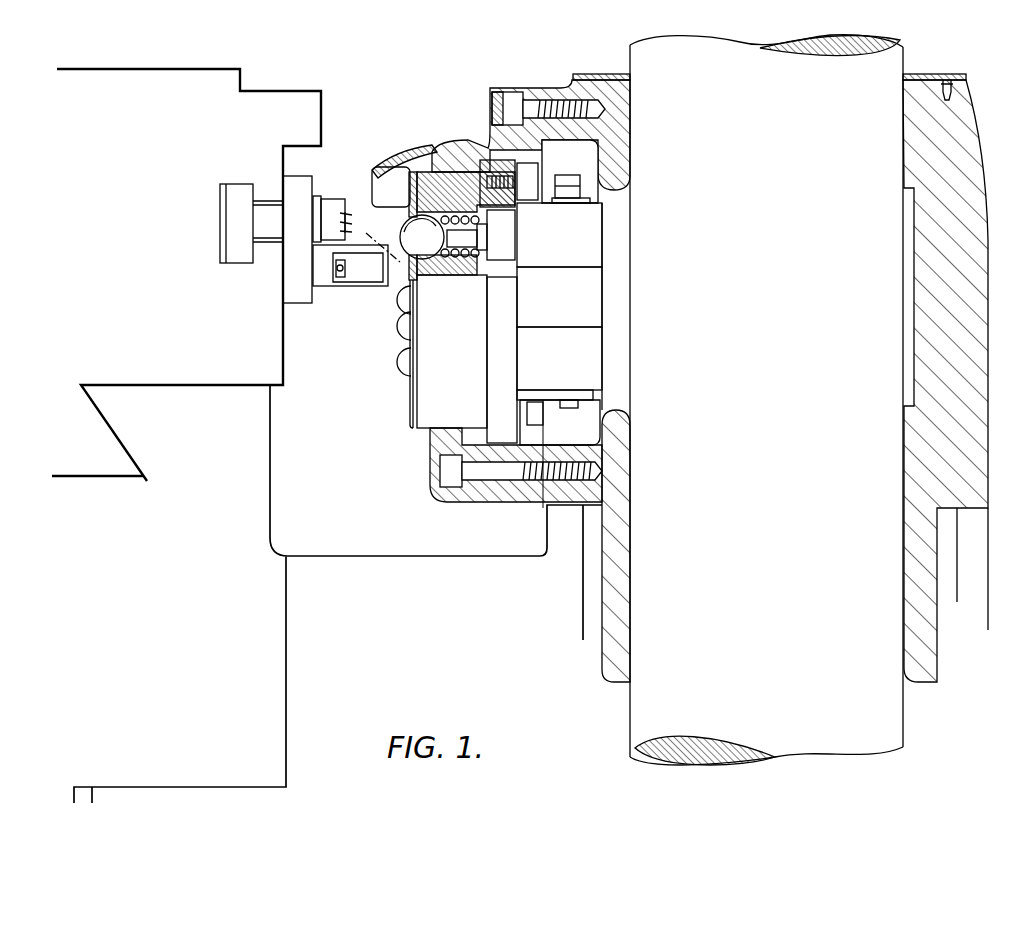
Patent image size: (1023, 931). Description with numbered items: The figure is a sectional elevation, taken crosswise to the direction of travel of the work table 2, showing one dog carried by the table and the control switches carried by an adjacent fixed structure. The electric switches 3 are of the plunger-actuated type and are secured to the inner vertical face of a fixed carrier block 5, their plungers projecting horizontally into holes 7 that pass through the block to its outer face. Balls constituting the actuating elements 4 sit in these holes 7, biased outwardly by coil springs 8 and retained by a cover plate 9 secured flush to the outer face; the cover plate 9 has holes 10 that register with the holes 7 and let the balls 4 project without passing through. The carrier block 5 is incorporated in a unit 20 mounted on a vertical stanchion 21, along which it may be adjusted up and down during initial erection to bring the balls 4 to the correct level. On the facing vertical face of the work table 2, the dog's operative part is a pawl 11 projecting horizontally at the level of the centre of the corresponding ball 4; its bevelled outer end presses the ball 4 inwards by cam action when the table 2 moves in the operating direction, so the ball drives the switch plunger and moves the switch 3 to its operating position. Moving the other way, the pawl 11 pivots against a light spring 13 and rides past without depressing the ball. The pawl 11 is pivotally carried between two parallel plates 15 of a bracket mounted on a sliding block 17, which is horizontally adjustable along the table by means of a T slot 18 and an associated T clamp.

The work table 2 is at (203, 69).
The electric switches 3 is at (588, 237).
The actuating elements 4 is at (400, 232).
The carrier block 5 is at (459, 334).
The holes 7 is at (457, 222).
The coil springs 8 is at (412, 175).
The cover plate 9 is at (403, 165).
The holes 10 is at (405, 212).
The pawl 11 is at (380, 243).
The light spring 13 is at (340, 278).
The parallel plates 15 is at (356, 243).
The sliding block 17 is at (300, 182).
The T slot 18 is at (266, 205).
The unit 20 is at (487, 490).
The vertical stanchion 21 is at (640, 713).